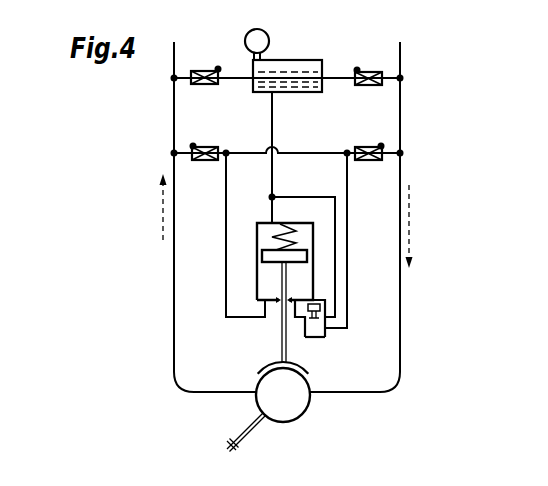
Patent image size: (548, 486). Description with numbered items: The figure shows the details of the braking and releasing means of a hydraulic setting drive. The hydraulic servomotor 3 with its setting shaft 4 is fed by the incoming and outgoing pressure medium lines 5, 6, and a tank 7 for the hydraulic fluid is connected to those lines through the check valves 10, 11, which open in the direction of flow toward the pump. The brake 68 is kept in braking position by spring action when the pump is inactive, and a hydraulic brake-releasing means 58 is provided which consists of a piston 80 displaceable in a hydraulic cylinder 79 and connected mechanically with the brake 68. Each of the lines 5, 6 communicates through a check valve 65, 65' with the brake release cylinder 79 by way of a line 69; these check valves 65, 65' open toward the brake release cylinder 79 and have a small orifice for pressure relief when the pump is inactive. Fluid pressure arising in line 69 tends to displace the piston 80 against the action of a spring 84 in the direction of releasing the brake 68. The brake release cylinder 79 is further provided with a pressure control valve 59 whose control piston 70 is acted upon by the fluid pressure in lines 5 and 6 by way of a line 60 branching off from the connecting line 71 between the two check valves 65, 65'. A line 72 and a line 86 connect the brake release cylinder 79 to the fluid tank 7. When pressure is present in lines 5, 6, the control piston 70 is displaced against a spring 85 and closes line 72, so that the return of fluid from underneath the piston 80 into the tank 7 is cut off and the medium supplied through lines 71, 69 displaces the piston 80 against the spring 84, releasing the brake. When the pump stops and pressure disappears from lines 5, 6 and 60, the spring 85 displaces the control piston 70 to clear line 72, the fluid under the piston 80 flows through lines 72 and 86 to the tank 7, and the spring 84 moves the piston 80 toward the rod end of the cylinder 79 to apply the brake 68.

The hydraulic servomotor 3 is at (307, 410).
The setting shaft 4 is at (226, 448).
The incoming pressure medium line 5 is at (400, 100).
The outgoing pressure medium line 6 is at (174, 112).
The tank 7 is at (327, 46).
The check valve 10 is at (378, 72).
The check valve 11 is at (203, 71).
The hydraulic brake-releasing means 58 is at (297, 243).
The pressure control valve 59 is at (318, 338).
The line 60 is at (347, 199).
The check valve 65 is at (399, 161).
The check valve 65' is at (165, 157).
The brake 68 is at (253, 373).
The line 69 is at (223, 198).
The control piston 70 is at (328, 321).
The connecting line 71 is at (312, 157).
The line 72 is at (336, 282).
The hydraulic cylinder 79 is at (257, 243).
The piston 80 is at (260, 261).
The spring 84 is at (268, 223).
The spring 85 is at (323, 309).
The line 86 is at (273, 140).